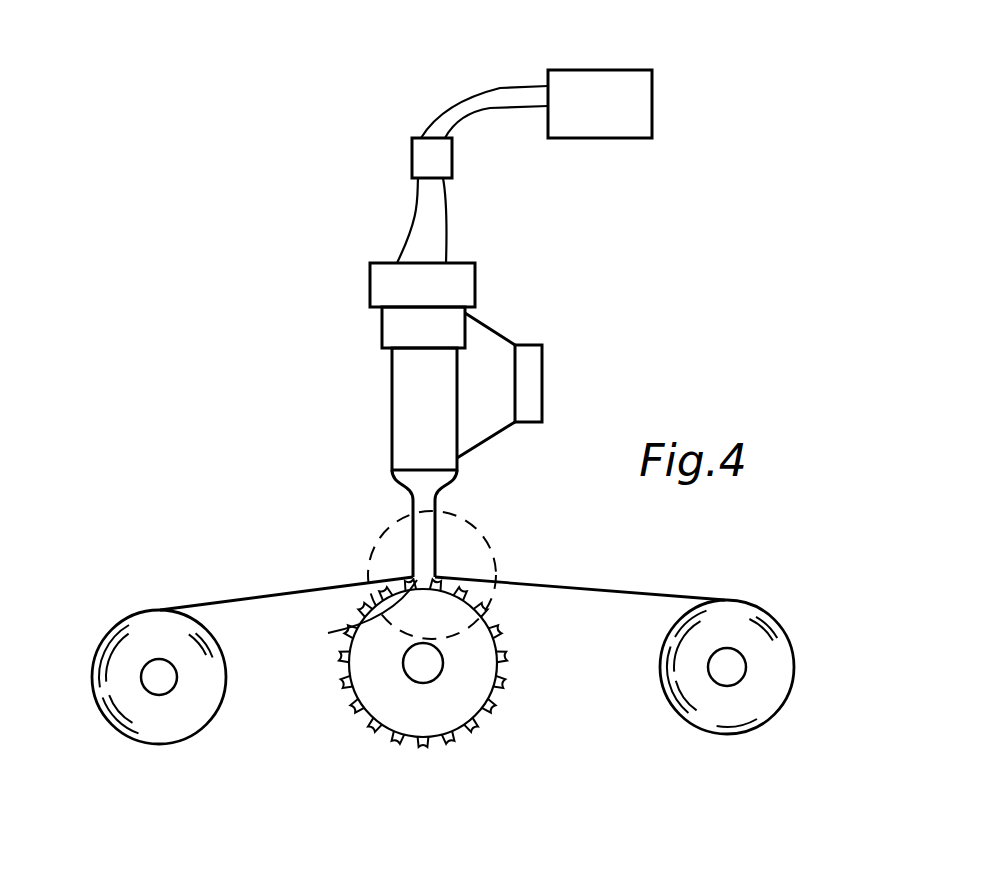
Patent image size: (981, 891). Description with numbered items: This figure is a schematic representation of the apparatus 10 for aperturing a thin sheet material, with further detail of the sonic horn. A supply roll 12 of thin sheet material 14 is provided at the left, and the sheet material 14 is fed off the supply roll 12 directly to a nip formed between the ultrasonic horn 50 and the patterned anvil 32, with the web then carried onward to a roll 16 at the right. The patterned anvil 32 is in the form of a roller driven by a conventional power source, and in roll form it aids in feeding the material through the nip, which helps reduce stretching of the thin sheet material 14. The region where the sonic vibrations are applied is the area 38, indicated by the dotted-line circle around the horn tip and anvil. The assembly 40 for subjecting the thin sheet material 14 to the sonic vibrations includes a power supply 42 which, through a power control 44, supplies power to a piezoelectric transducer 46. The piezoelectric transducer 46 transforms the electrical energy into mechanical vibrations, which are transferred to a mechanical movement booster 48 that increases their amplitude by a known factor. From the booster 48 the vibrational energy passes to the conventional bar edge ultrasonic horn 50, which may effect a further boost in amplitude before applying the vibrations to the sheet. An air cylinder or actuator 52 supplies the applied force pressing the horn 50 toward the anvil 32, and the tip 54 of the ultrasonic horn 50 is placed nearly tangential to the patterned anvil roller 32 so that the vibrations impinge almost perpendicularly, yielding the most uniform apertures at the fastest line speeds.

The apparatus 10 is at (238, 437).
The supply roll 12 is at (122, 713).
The thin sheet material 14 is at (236, 604).
The take-up roll 16 is at (727, 667).
The patterned anvil 32 is at (477, 673).
The area 38 is at (497, 549).
The assembly 40 is at (563, 285).
The power supply 42 is at (585, 68).
The power control 44 is at (410, 160).
The piezoelectric transducer 46 is at (477, 270).
The mechanical movement booster 48 is at (380, 330).
The ultrasonic horn 50 is at (390, 410).
The air cylinder or actuator 52 is at (543, 383).
The tip 54 is at (349, 615).